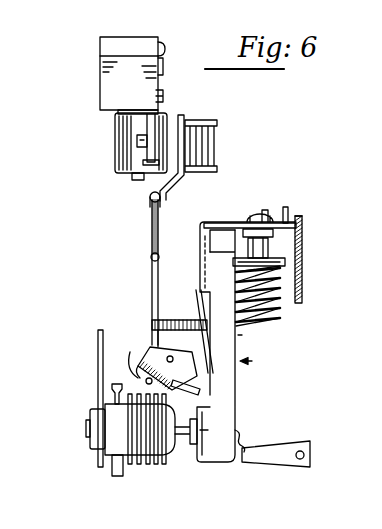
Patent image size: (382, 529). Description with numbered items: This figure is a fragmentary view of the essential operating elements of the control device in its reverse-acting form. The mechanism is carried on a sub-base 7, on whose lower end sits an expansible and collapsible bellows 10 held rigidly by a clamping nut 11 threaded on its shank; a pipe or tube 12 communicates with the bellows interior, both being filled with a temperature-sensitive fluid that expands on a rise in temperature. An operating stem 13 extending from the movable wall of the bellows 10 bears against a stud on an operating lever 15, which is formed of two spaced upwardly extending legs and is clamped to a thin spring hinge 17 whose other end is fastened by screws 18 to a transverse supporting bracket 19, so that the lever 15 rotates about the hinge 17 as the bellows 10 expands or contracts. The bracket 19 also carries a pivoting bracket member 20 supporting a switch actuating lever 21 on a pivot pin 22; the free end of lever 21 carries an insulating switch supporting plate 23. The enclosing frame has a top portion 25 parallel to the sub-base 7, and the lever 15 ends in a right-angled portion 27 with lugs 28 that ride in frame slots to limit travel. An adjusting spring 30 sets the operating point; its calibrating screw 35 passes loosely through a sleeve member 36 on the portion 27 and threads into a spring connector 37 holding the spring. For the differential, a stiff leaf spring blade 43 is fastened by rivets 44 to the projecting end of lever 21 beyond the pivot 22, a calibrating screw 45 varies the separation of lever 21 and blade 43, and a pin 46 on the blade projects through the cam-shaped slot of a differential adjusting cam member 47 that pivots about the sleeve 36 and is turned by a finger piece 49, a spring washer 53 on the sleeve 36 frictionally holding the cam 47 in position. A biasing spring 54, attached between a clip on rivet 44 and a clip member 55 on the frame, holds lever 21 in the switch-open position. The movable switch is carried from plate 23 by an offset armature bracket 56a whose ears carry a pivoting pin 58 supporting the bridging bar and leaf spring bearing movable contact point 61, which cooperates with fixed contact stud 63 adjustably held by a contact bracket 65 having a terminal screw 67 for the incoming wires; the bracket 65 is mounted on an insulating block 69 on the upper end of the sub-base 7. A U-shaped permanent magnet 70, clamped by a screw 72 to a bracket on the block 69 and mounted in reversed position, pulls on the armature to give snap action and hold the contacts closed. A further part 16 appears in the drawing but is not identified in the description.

The sub-base 7 is at (97, 353).
The bellows 10 is at (145, 462).
The clamping nut 11 is at (90, 446).
The pipe or tube 12 is at (115, 467).
The operating stem 13 is at (187, 445).
The operating lever 15 is at (256, 362).
The housing column 16 is at (200, 432).
The spring hinge 17 is at (170, 386).
The screws 18 is at (146, 379).
The transverse supporting bracket 19 is at (150, 343).
The pivoting bracket member 20 is at (143, 364).
The switch actuating lever 21 is at (152, 271).
The pivot pin 22 is at (170, 355).
The insulating switch supporting plate 23 is at (151, 224).
The top portion 25 is at (303, 264).
The portion 27 is at (287, 207).
The lugs 28 is at (228, 222).
The adjusting spring 30 is at (283, 320).
The calibrating screw 35 is at (266, 210).
The sleeve member 36 is at (269, 246).
The spring connector 37 is at (268, 270).
The leaf spring blade 43 is at (212, 299).
The rivets 44 is at (240, 345).
The calibrating or initial adjustment screw 45 is at (158, 319).
The pin 46 is at (257, 214).
The differential adjusting cam member 47 is at (212, 231).
The finger piece 49 is at (299, 216).
The spring washer 53 is at (274, 232).
The biasing spring 54 is at (241, 430).
The clip member 55 is at (290, 448).
The offset armature bracket 56a is at (163, 188).
The pivoting pin 58 is at (216, 145).
The movable contact point 61 is at (185, 121).
The fixed contact stud 63 is at (167, 118).
The contact bracket 65 is at (150, 123).
The terminal screw 67 is at (159, 48).
The insulating block 69 is at (126, 50).
The permanent magnet 70 is at (130, 146).
The screw 72 is at (143, 177).